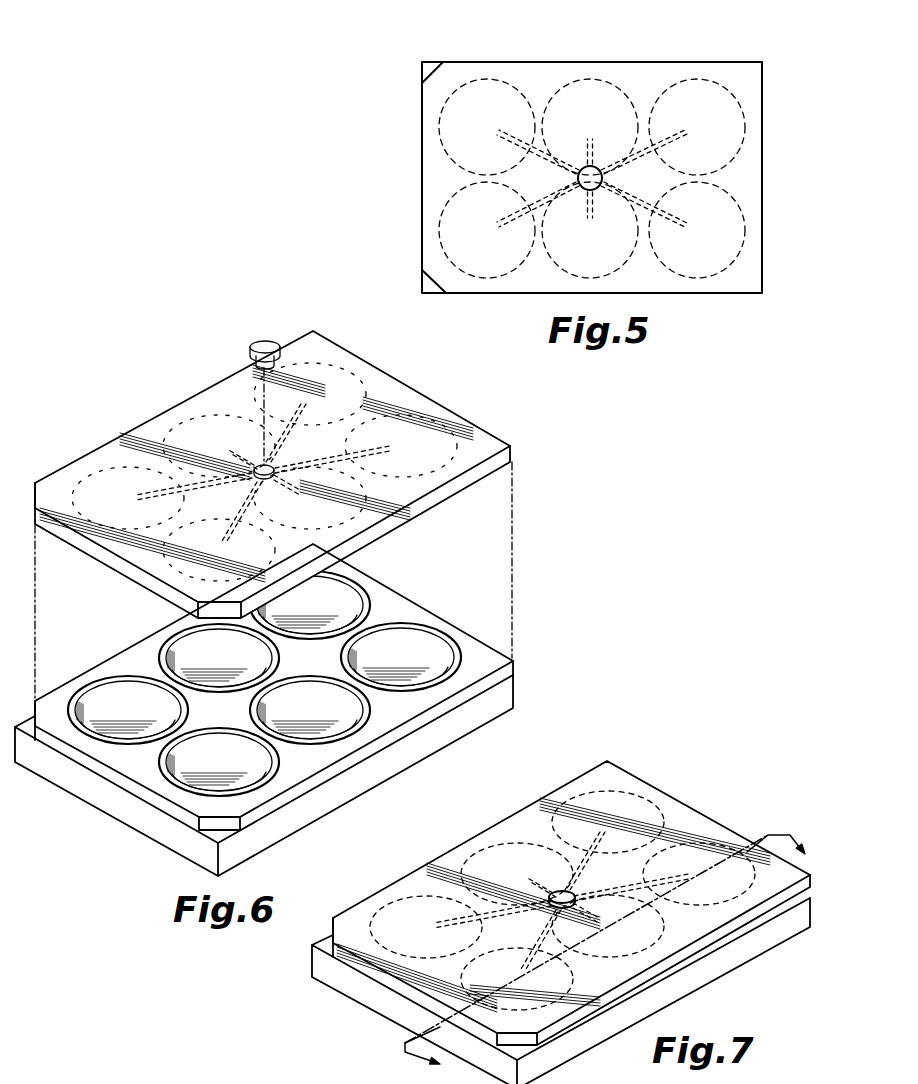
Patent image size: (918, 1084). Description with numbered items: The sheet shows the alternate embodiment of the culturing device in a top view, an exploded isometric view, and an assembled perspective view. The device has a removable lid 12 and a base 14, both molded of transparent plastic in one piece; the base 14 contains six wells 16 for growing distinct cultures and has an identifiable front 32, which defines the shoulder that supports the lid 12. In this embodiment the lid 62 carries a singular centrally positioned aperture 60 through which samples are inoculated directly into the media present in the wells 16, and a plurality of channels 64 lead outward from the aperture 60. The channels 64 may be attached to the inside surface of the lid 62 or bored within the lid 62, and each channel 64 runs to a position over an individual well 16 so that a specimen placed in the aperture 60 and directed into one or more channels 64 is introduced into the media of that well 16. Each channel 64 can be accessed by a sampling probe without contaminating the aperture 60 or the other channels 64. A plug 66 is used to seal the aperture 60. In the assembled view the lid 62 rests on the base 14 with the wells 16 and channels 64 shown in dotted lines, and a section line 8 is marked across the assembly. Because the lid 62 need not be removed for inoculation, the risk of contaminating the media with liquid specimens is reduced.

In FIG. 7, the section line 8- 8 is at (612, 959).
In FIG. 6, the removable lid 12 is at (285, 474).
In FIG. 6, the base 14 is at (320, 687).
In FIG. 6, the wells 16 is at (438, 657).
In FIG. 6, the front 32 is at (140, 823).
In FIG. 6, the aperture 60 is at (257, 463).
In FIG. 6, the lid 62 is at (452, 432).
In FIG. 5, the channels 64 is at (703, 117).
In FIG. 6, the channels 64 is at (152, 490).
In FIG. 6, the plug 66 is at (258, 342).